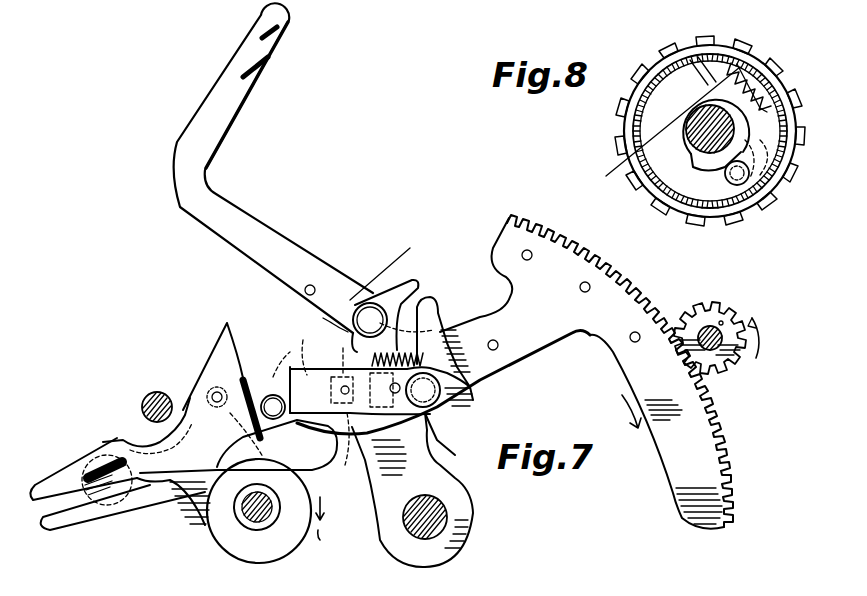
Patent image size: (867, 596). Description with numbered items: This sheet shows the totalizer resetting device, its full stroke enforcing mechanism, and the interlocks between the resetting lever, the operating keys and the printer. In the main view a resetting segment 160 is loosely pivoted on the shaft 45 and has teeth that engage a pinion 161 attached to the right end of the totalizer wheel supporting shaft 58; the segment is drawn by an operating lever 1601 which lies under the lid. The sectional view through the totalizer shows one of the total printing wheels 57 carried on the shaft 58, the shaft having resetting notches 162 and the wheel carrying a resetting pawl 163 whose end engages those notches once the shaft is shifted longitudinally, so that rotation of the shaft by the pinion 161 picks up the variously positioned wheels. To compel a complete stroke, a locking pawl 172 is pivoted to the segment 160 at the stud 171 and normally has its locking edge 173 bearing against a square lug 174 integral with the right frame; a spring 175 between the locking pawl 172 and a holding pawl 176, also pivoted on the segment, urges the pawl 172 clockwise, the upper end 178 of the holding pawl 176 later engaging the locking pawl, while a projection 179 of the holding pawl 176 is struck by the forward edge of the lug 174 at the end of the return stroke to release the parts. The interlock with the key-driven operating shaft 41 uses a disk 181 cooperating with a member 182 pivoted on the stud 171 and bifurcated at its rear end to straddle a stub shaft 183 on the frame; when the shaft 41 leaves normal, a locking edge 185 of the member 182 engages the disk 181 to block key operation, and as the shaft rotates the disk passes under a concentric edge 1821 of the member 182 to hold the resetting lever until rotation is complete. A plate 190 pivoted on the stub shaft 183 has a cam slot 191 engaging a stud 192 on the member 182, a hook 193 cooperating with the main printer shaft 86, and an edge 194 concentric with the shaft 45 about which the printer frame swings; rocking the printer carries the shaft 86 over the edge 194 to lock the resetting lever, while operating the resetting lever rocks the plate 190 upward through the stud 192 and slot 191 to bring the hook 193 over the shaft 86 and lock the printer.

In FIG. 7, the operating lever 1601 is at (289, 22).
In FIG. 7, the holding pawl 176 is at (366, 298).
In FIG. 7, the spring 175 is at (420, 298).
In FIG. 7, the upper end of holding pawl 178 is at (434, 440).
In FIG. 7, the resetting segment 160 is at (628, 290).
In FIG. 7, the pinion 161 is at (736, 320).
In FIG. 7, the resetting notches 162 is at (718, 318).
In FIG. 8, the resetting notches 162 is at (771, 195).
In FIG. 7, the shaft 58 is at (728, 365).
In FIG. 8, the shaft 58 is at (661, 125).
In FIG. 7, the cam slot 191 is at (313, 390).
In FIG. 7, the locking pawl 172 is at (470, 393).
In FIG. 7, the stud 171 is at (447, 413).
In FIG. 7, the projection 179 is at (335, 372).
In FIG. 7, the square lug 174 is at (342, 365).
In FIG. 7, the locking edge 173 is at (347, 466).
In FIG. 7, the shaft 45 is at (410, 532).
In FIG. 7, the operating shaft 41 is at (250, 527).
In FIG. 7, the disk 181 is at (273, 560).
In FIG. 7, the plate 190 is at (238, 426).
In FIG. 7, the edge 194 is at (200, 362).
In FIG. 7, the stud 192 is at (274, 378).
In FIG. 7, the concentric edge 1821 is at (225, 447).
In FIG. 7, the main operating printer shaft 86 is at (162, 393).
In FIG. 7, the hook 193 is at (150, 424).
In FIG. 7, the member 182 is at (154, 461).
In FIG. 7, the stub shaft 183 is at (122, 480).
In FIG. 7, the locking edge 185 is at (180, 527).
In FIG. 8, the total printing wheels 57 is at (668, 208).
In FIG. 8, the resetting pawls 163 is at (732, 164).